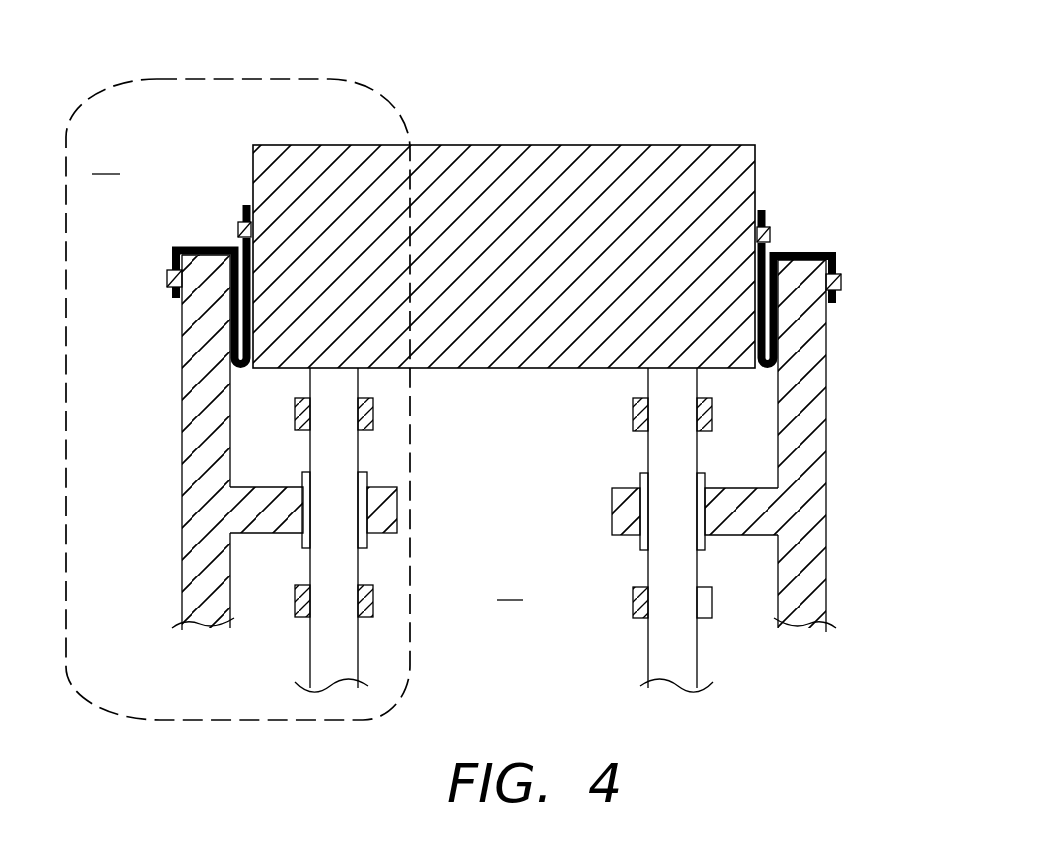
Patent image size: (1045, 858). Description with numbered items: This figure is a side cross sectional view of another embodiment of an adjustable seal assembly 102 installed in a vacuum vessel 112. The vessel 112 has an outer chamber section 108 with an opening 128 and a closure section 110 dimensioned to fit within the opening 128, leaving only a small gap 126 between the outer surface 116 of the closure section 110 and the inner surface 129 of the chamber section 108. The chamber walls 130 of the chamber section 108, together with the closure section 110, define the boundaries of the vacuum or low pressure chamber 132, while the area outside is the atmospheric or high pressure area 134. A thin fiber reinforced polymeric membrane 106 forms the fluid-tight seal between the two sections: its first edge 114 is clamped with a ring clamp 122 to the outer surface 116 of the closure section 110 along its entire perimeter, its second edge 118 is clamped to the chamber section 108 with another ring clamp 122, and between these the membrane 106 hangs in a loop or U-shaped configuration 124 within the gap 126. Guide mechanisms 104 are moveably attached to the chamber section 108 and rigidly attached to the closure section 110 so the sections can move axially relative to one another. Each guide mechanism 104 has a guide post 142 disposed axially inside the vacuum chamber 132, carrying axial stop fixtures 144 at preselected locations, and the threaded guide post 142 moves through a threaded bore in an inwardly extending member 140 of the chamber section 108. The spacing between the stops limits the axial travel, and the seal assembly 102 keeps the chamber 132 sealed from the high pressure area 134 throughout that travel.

The adjustable seal assembly 102 is at (162, 50).
The guide mechanisms 104 is at (383, 660).
The thin fiber reinforced polymeric membrane 106 is at (236, 250).
The chamber section 108 is at (167, 595).
The closure section 110 is at (478, 132).
The vacuum vessel 112 is at (772, 50).
The first edge 114 is at (246, 205).
The outer surface 116 is at (253, 148).
The second edge 118 is at (178, 300).
The ring clamp 122 is at (240, 228).
The loop or U-shaped configuration 124 is at (251, 377).
The gap 126 is at (250, 398).
The opening 128 is at (500, 383).
The inner surface 129 is at (230, 463).
The chamber walls 130 is at (224, 519).
The vacuum or low pressure chamber 132 is at (524, 559).
The atmospheric or high pressure area 134 is at (148, 135).
The inwardly extending member 140 is at (388, 513).
The guide post 142 is at (360, 568).
The axial stop fixture 144 is at (375, 410).